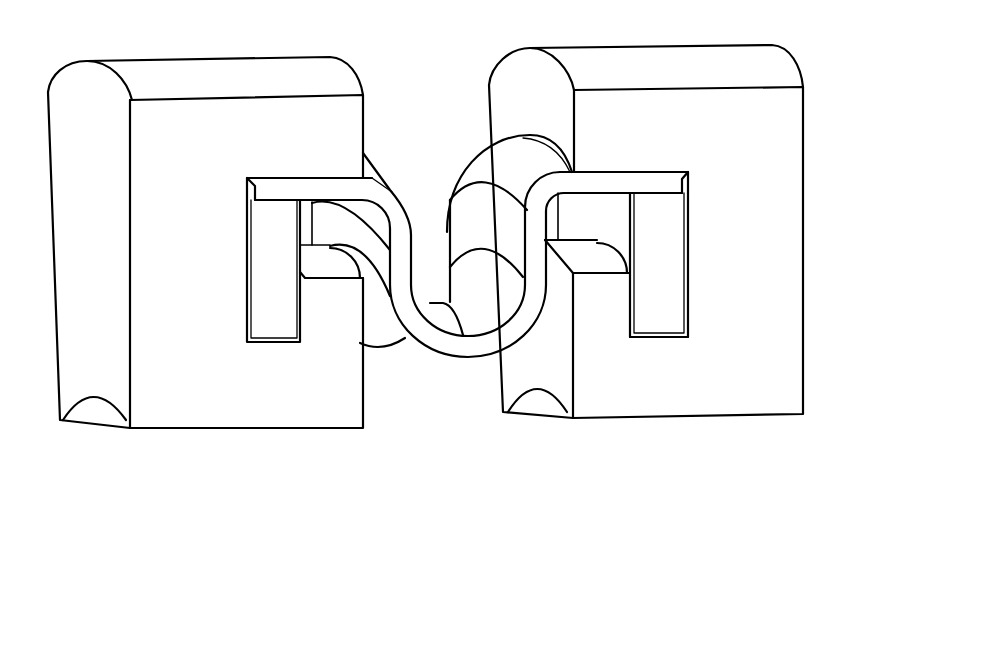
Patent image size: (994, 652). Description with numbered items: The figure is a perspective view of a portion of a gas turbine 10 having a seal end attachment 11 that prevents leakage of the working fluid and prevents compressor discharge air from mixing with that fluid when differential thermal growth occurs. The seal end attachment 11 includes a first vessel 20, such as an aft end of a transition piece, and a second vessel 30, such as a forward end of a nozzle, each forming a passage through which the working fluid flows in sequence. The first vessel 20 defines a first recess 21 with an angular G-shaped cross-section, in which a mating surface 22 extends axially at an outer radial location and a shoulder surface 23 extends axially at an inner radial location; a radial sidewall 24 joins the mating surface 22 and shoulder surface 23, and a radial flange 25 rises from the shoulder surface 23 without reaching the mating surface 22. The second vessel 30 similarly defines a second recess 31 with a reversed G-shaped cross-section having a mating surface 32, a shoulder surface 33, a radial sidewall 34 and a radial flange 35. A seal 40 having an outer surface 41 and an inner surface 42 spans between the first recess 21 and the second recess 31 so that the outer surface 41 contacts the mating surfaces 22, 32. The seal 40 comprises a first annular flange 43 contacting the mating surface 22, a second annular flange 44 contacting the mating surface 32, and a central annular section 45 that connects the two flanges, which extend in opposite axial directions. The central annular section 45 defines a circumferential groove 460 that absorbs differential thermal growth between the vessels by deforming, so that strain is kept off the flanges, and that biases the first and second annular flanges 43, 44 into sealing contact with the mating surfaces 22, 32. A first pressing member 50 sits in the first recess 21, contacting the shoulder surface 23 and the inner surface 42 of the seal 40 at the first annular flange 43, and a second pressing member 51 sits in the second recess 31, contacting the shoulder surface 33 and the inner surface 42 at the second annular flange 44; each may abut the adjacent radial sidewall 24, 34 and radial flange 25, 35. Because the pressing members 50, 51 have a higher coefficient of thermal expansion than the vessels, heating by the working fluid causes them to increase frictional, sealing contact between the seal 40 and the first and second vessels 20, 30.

The gas turbine 10 is at (168, 502).
The seal end attachment 11 is at (431, 108).
The first vessel 20 is at (85, 304).
The first recess 21 is at (333, 275).
The mating surface 22 is at (296, 177).
The shoulder surface 23 is at (248, 343).
The radial sidewall 24 is at (233, 247).
The radial flange 25 is at (320, 303).
The second vessel 30 is at (782, 140).
The second recess 31 is at (574, 228).
The mating surface 32 is at (635, 172).
The shoulder surface 33 is at (665, 336).
The radial sidewall 34 is at (694, 241).
The radial flange 35 is at (617, 308).
The seal 40 is at (445, 347).
The outer surface 41 is at (430, 312).
The inner surface 42 is at (400, 336).
The first annular flange 43 is at (337, 177).
The second annular flange 44 is at (600, 188).
The central annular section 45 is at (380, 148).
The circumferential groove 460 is at (457, 220).
The first pressing member 50 is at (258, 292).
The second pressing member 51 is at (650, 250).